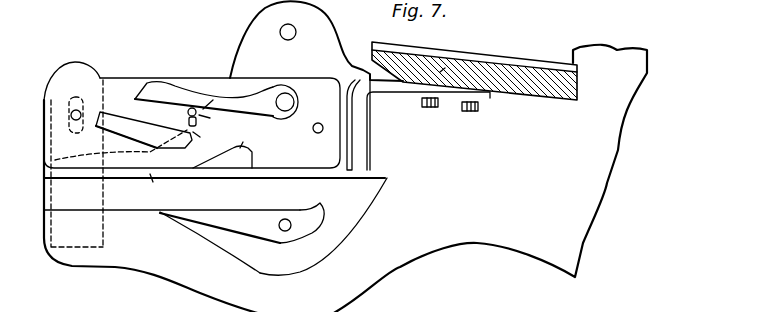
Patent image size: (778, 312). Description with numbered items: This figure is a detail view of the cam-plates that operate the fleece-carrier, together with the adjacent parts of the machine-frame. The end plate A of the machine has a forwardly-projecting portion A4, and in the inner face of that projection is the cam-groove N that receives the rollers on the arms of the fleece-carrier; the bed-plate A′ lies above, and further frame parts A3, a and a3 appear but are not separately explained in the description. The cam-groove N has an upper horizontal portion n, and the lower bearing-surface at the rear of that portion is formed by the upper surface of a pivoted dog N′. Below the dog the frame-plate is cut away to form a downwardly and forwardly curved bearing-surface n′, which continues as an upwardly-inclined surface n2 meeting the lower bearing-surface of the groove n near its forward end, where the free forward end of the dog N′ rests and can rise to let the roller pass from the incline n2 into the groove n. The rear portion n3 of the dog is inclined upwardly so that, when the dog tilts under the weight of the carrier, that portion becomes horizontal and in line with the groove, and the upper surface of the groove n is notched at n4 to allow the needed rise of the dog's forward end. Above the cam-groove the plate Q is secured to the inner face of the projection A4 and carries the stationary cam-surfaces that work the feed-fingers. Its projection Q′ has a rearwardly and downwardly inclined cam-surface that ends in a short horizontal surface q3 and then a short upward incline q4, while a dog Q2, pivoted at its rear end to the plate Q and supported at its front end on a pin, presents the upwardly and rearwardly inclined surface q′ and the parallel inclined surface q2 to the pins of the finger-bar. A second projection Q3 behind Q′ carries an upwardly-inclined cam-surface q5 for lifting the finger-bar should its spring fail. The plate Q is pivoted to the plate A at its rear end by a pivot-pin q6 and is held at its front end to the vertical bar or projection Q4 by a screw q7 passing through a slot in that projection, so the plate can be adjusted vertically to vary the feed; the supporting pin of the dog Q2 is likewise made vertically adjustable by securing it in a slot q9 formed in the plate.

The end plate A is at (345, 178).
The bed-plate A′ is at (448, 73).
The recess in body A3 is at (396, 94).
The forwardly-projecting portion of end plate A4 is at (101, 164).
The bar a is at (492, 64).
The dome portion with hole a3 is at (316, 41).
The cam-plate Q is at (192, 123).
The projection Q′ is at (144, 130).
The dog Q2 is at (275, 102).
The second projection Q3 is at (222, 157).
The vertical bar or projection Q4 is at (72, 81).
The inclined surface q′ is at (146, 82).
The inclined surface q2 is at (195, 96).
The horizontal surface q3 is at (121, 145).
The upward incline q4 is at (202, 140).
The upwardly-inclined cam-surface q5 is at (241, 138).
The pivot-pin q6 is at (312, 136).
The screw q7 is at (69, 116).
The slot q9 is at (212, 122).
The cam-groove N is at (214, 194).
The pivoted dog N′ is at (242, 223).
The upper horizontal portion of cam-groove n is at (126, 197).
The curved bearing-surface n′ is at (333, 260).
The upwardly-inclined surface n2 is at (210, 242).
The rear portion of dog n3 is at (294, 222).
The notch n4 is at (163, 178).